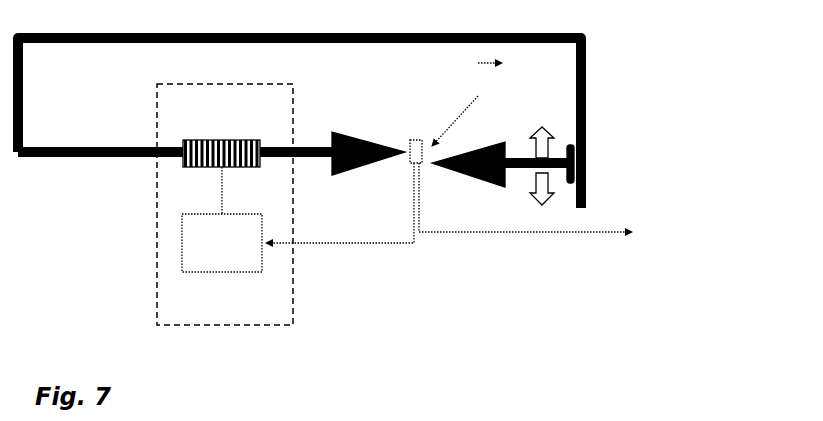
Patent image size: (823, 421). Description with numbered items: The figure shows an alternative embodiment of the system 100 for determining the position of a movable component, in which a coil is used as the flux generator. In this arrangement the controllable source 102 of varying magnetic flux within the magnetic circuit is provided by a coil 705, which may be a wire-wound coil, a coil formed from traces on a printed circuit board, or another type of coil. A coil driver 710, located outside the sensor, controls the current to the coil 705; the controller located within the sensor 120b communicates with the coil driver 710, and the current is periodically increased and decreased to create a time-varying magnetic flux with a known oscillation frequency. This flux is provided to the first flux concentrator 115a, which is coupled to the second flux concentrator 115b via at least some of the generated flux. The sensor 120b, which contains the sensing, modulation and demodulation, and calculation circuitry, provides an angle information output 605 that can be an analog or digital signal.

The system 100 is at (125, 222).
The controllable source of varying magnetic flux 102 is at (157, 130).
The coil 705 is at (246, 143).
The coil driver 710 is at (217, 268).
The first flux concentrator 115a is at (352, 162).
The second flux concentrator 115b is at (487, 162).
The sensor 120b is at (410, 140).
The angle information output 605 is at (588, 200).